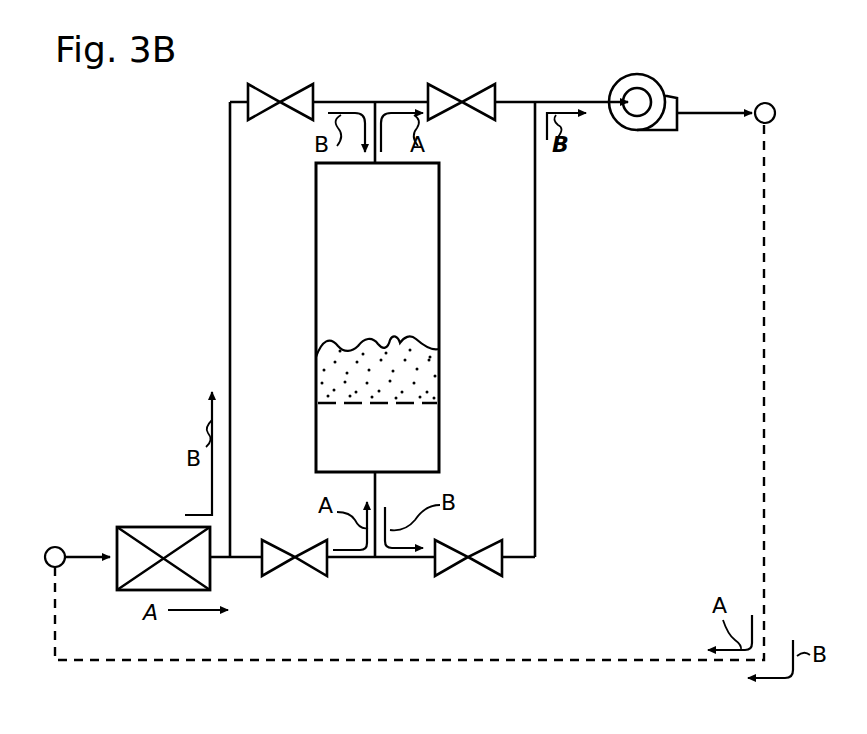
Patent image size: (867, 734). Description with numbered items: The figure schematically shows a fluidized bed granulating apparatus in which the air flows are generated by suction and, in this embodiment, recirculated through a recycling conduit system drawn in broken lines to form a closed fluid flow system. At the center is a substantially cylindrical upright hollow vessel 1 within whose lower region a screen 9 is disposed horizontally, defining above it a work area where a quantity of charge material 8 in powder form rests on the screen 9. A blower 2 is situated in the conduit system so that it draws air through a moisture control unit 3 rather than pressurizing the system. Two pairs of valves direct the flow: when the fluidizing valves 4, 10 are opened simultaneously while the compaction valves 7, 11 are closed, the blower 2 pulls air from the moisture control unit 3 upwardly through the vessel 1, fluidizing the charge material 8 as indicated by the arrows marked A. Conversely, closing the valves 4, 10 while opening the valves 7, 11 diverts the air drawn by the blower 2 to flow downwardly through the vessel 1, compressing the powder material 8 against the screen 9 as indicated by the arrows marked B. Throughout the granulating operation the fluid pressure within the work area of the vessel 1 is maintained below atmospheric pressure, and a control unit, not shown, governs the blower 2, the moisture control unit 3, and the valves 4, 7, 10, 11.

The vessel 1 is at (440, 237).
The blower 2 is at (627, 78).
The moisture control unit 3 is at (174, 525).
The fluidizing valve 4 is at (290, 565).
The compaction valve 7 is at (462, 565).
The charge material 8 is at (428, 373).
The screen 9 is at (403, 405).
The fluidizing valve 10 is at (443, 95).
The compaction valve 11 is at (300, 95).